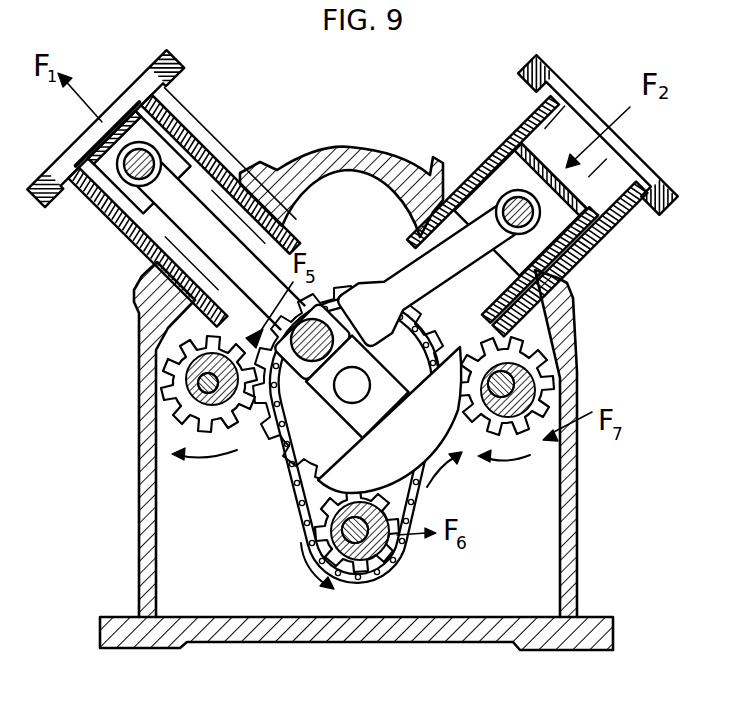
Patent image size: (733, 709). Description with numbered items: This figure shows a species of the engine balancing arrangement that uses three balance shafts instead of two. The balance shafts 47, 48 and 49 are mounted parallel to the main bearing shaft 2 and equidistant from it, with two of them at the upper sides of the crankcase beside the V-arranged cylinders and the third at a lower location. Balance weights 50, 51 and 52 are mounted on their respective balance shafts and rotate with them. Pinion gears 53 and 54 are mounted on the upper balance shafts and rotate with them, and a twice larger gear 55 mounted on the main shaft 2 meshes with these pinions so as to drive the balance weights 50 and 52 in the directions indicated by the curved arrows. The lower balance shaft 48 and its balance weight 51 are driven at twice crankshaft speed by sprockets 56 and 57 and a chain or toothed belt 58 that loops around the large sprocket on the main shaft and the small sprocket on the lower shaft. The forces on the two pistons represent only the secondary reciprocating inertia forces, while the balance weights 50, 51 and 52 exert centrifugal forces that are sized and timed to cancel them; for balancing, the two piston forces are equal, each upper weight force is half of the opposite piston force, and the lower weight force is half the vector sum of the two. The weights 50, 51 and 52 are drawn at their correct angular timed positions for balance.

The main bearing shaft 2 is at (348, 392).
The balance shaft 47 is at (197, 383).
The balance shaft 48 is at (339, 545).
The balance shaft 49 is at (538, 399).
The balance weight 50 is at (179, 396).
The balance weight 51 is at (382, 558).
The balance weight 52 is at (538, 388).
The pinion gear 53 is at (172, 412).
The pinion gear 54 is at (567, 335).
The twice larger gear 55 is at (344, 290).
The sprocket 56 is at (352, 364).
The sprocket 57 is at (349, 442).
The chain or toothed belt 58 is at (402, 554).